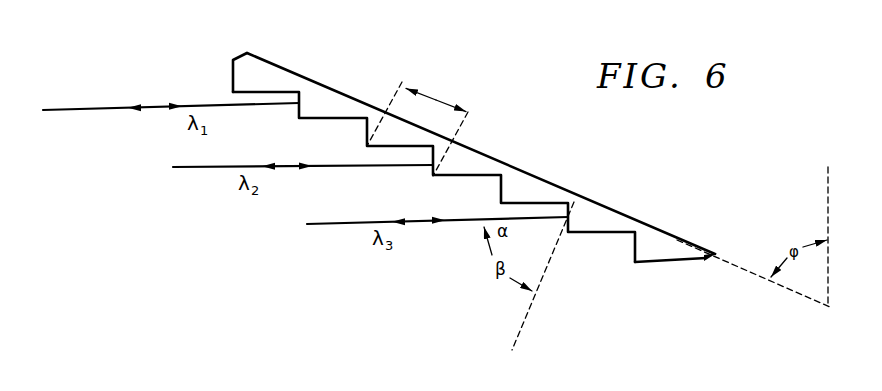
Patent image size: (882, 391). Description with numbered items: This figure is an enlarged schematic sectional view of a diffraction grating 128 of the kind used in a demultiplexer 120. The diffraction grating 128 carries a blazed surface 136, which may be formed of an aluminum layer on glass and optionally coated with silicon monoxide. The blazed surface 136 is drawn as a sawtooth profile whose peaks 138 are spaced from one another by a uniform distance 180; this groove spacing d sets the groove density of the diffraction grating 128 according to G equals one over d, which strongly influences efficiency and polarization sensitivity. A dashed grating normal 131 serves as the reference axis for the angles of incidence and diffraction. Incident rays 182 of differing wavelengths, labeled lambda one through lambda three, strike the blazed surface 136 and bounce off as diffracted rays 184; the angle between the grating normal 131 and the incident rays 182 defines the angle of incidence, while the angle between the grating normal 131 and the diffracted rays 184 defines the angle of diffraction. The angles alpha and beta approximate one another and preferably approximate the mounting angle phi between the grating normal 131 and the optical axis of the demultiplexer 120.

The demultiplexer 120 is at (433, 209).
The diffraction grating 128 is at (609, 201).
The grating normal 131 is at (526, 322).
The blazed surface 136 is at (222, 73).
The peaks 138 is at (630, 266).
The distance 180 is at (460, 104).
The incident rays 182 is at (167, 119).
The diffracted rays 184 is at (126, 101).